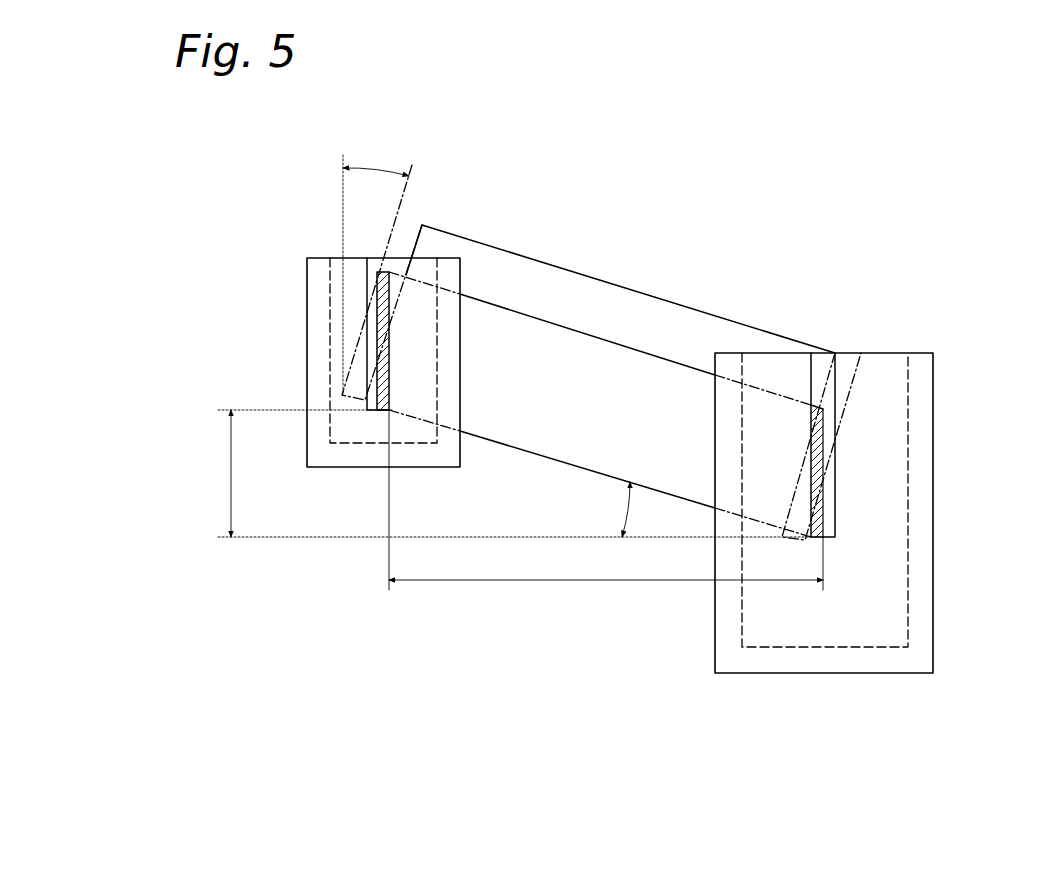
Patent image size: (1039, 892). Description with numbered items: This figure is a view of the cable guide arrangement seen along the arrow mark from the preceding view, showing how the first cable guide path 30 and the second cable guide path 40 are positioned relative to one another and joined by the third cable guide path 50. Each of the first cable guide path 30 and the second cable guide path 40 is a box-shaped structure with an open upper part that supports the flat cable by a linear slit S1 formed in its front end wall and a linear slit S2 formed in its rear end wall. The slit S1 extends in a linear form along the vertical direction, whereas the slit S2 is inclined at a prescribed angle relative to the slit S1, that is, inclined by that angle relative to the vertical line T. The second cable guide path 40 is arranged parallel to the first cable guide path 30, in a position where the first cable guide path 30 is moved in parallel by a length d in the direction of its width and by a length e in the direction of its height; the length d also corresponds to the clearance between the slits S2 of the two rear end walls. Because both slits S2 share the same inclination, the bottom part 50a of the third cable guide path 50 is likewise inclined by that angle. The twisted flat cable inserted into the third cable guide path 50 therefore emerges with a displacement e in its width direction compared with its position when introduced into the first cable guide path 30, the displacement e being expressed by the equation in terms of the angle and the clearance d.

The first cable guide path 30 is at (933, 580).
The second cable guide path 40 is at (307, 287).
The third cable guide path 50 is at (668, 300).
The bottom part 50a is at (512, 455).
The slit S1 is at (365, 302).
The slit S2 is at (385, 271).
The vertical line T is at (342, 195).
The length (displacement) in the direction of height/width e is at (518, 473).
The length in the direction of width d is at (606, 500).